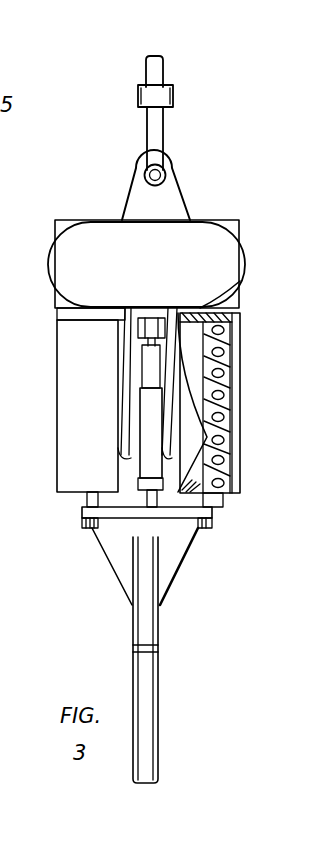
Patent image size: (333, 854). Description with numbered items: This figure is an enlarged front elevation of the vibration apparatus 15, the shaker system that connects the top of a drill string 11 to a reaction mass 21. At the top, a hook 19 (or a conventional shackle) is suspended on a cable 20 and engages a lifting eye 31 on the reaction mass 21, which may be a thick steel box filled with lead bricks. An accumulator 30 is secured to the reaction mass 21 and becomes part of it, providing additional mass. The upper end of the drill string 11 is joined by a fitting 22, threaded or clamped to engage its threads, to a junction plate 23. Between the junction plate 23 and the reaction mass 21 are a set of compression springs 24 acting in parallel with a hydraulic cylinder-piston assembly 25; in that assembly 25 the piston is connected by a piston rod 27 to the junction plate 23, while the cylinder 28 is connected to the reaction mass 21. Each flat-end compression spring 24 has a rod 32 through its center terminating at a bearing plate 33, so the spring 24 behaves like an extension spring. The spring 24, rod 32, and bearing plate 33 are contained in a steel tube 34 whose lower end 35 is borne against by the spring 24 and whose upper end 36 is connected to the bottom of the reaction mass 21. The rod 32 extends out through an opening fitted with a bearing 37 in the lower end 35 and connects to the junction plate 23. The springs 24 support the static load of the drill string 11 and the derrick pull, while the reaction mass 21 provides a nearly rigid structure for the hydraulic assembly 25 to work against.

The drill string 11 is at (148, 688).
The vibration apparatus 15 is at (226, 158).
The hook 19 is at (160, 138).
The cable 20 is at (160, 70).
The reaction mass 21 is at (66, 220).
The fitting 22 is at (157, 650).
The junction plate 23 is at (122, 552).
The compression springs 24 is at (60, 430).
The hydraulic cylinder-piston assembly 25 is at (126, 472).
The piston rod 27 is at (145, 490).
The cylinder 28 is at (83, 505).
The accumulator 30 is at (222, 258).
The lifting eye 31 is at (168, 200).
The rod 32 is at (232, 478).
The bearing plate 33 is at (232, 322).
The steel tube 34 is at (103, 378).
The lower end 35 is at (224, 498).
The upper end 36 is at (242, 297).
The bearing 37 is at (211, 495).